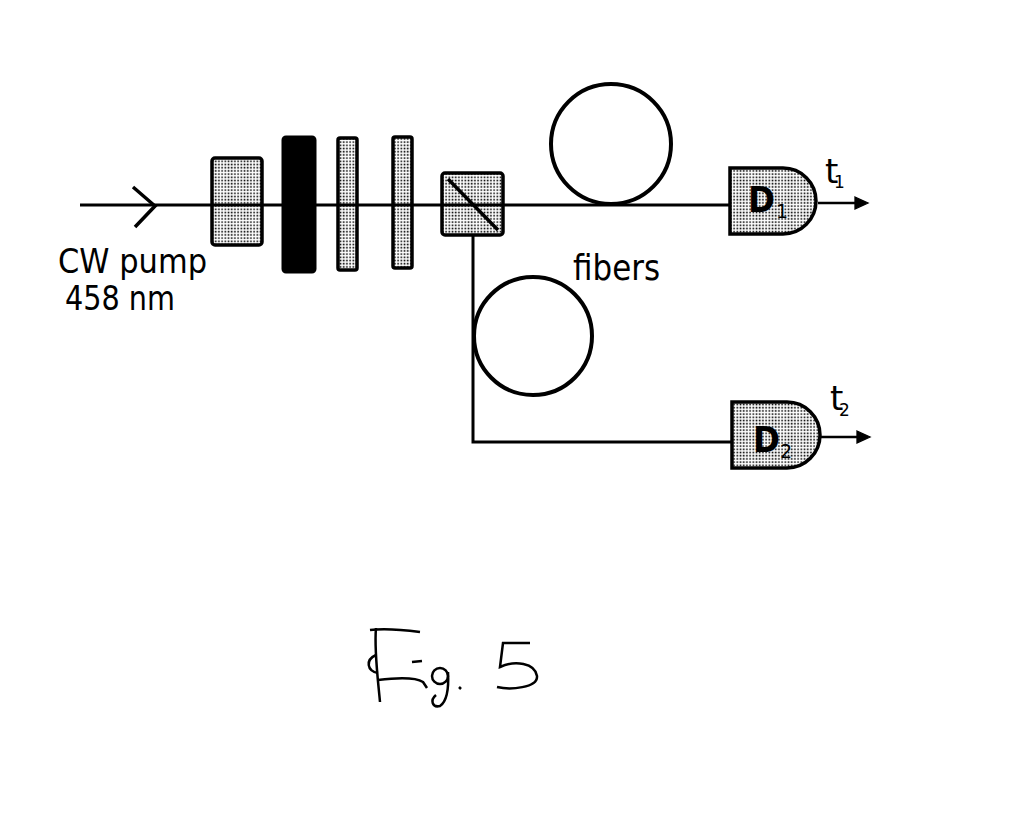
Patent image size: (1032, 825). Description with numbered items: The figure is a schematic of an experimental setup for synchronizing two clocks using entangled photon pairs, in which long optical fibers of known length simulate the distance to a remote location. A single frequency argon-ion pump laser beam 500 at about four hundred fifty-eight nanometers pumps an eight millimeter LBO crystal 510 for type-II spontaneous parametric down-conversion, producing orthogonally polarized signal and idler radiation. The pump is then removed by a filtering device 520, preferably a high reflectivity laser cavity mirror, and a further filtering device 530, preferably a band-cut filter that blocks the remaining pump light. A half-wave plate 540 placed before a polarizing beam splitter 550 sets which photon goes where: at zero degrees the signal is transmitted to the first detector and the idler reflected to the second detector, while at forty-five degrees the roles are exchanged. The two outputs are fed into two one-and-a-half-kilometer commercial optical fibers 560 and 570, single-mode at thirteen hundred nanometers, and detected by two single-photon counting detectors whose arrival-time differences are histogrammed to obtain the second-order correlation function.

The pump laser beam 500 is at (82, 205).
The LBO crystal 510 is at (235, 247).
The filtering device 520 is at (313, 137).
The filtering device 530 is at (348, 138).
The half-wave plate 540 is at (413, 270).
The polarizing beam splitter 550 is at (503, 173).
The optical fiber 560 is at (645, 100).
The optical fiber 570 is at (593, 330).